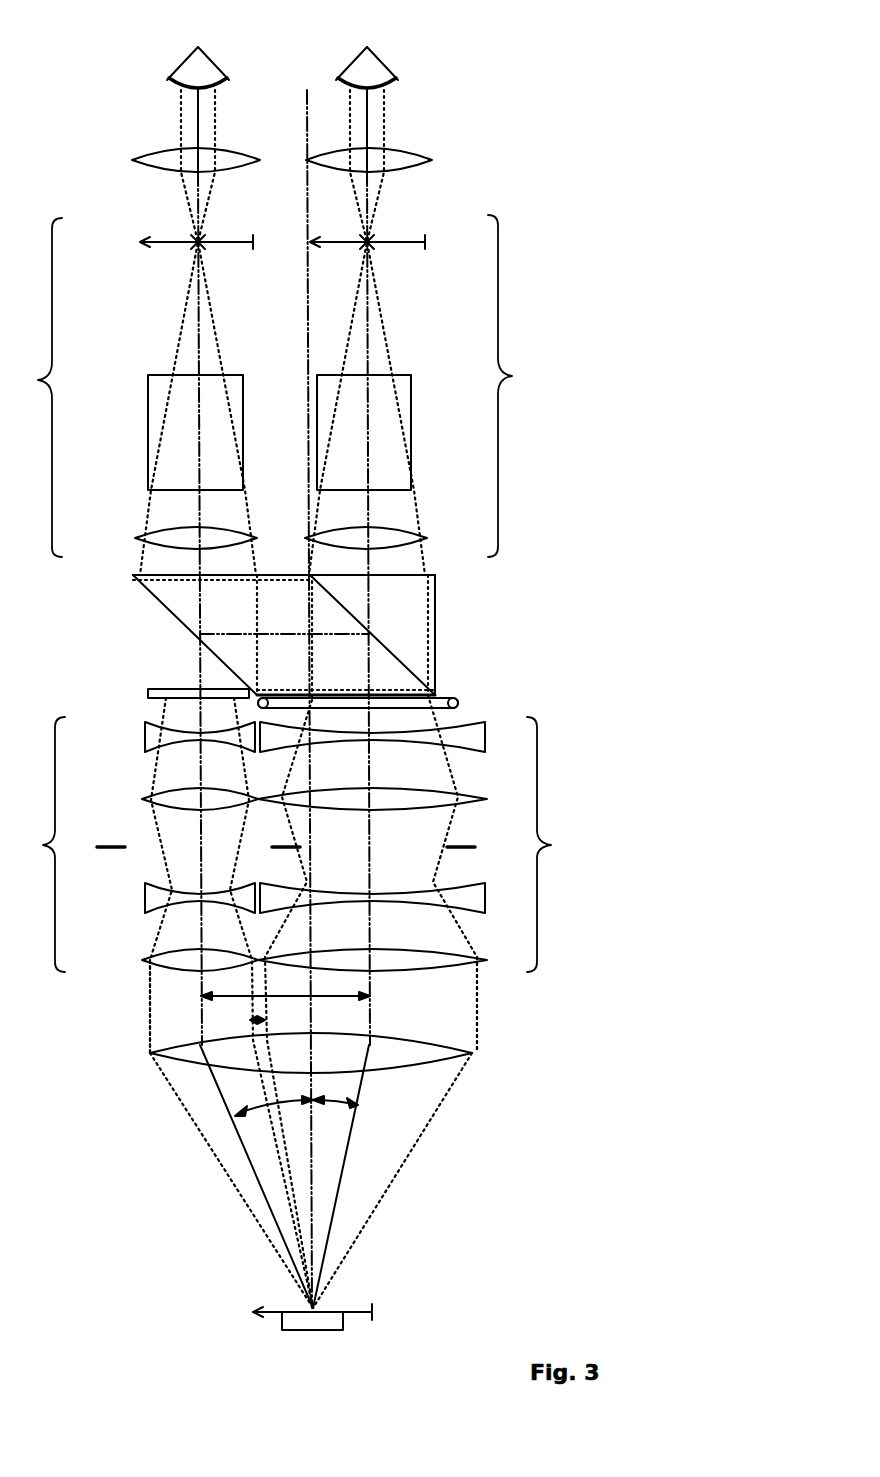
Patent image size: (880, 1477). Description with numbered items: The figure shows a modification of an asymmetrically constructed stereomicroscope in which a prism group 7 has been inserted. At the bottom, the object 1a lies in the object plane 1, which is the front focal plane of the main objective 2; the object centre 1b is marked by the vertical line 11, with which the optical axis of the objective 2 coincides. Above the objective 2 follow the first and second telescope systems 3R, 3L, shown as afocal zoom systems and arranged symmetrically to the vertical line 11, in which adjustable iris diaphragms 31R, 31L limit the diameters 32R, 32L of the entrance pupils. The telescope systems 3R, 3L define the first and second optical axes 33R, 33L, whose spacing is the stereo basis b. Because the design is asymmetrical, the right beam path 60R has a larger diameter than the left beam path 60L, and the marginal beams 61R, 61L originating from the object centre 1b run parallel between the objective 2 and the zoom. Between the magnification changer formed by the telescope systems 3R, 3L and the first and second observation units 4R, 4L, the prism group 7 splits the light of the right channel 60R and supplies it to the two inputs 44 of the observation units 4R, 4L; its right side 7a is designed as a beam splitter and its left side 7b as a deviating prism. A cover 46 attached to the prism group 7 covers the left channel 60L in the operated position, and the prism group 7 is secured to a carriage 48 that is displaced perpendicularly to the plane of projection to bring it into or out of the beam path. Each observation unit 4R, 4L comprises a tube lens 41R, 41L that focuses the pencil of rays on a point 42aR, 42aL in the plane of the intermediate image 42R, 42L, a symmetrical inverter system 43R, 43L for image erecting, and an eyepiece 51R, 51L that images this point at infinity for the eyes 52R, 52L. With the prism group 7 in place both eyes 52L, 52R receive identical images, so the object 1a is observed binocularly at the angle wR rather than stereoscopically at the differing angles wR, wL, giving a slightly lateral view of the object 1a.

The object plane 1 is at (256, 1310).
The object 1a is at (284, 1322).
The object centre 1b is at (322, 1308).
The main objective 2 is at (160, 1058).
The second telescope system 3L is at (36, 844).
The first telescope system 3R is at (557, 844).
The second observation unit 4L is at (41, 387).
The first observation unit 4R is at (517, 386).
The prism group 7 is at (450, 652).
The right side of the prism group 7a is at (420, 587).
The left side of the prism group 7b is at (176, 617).
The vertical line 11 is at (306, 103).
The iris diaphragm 31L is at (116, 851).
The iris diaphragm 31R is at (455, 852).
The diameter of the entrance pupil 32L is at (140, 1021).
The diameter of the entrance pupil 32R is at (484, 1021).
The second optical axis 33L is at (201, 775).
The first optical axis 33R is at (370, 775).
The tube lens 41L is at (142, 542).
The tube lens 41R is at (467, 537).
The intermediate image 42L is at (160, 246).
The intermediate image 42R is at (415, 246).
The point in the plane of the intermediate image 42aL is at (195, 237).
The point in the plane of the intermediate image 42aR is at (370, 237).
The inverter system 43L is at (148, 395).
The inverter system 43R is at (412, 395).
The inputs of the observation units 44 is at (140, 560).
The cover 46 is at (150, 692).
The carriage 48 is at (458, 703).
The eyepiece 51L is at (143, 161).
The eyepiece 51R is at (425, 161).
The left eye 52L is at (178, 66).
The right eye 52R is at (387, 66).
The left beam path 60L is at (236, 1172).
The right beam path 60R is at (378, 1170).
The marginal beam 61L is at (270, 1247).
The marginal beam 61R is at (337, 1264).
The stereo basis b is at (305, 995).
The angle wL is at (230, 1130).
The angle wR is at (358, 1130).